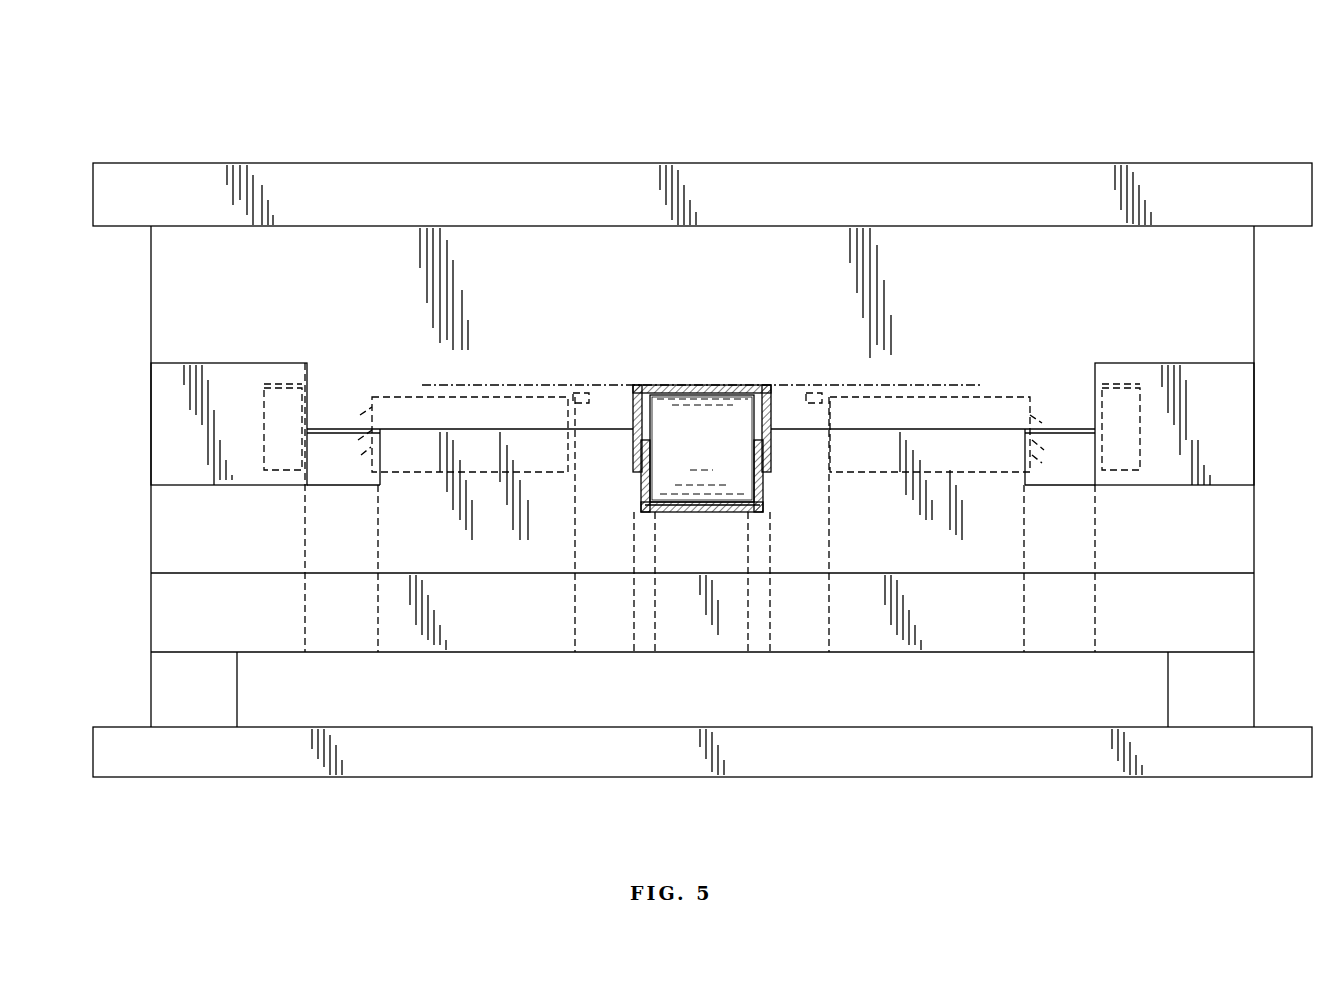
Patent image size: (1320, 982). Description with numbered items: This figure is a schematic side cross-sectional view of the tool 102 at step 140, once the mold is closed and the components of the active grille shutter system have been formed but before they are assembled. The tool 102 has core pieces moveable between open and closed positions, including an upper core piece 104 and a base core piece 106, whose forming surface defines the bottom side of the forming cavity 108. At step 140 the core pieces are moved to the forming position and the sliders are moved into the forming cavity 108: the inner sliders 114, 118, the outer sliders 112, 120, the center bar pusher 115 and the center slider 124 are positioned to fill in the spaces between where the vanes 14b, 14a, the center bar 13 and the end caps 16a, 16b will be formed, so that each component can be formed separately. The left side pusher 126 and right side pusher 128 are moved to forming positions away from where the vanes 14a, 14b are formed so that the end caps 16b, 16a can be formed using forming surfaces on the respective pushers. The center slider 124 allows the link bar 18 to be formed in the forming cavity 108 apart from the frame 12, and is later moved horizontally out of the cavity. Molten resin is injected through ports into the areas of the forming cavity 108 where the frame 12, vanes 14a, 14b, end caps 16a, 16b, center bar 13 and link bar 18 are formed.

The step 140 is at (1180, 93).
The tool 102 is at (345, 243).
The upper core piece 104 is at (720, 327).
The base core piece 106 is at (940, 505).
The forming cavity 108 is at (922, 374).
The frame 12 is at (820, 376).
The center bar 13 is at (633, 418).
The center slider 124 is at (718, 422).
The link bar 18 is at (762, 495).
The vane 14a is at (1010, 390).
The vane 14b is at (395, 390).
The end cap 16a is at (1120, 382).
The end cap 16b is at (283, 382).
The left side pusher 126 is at (204, 435).
The right side pusher 128 is at (1228, 435).
The outer slider 112 is at (344, 632).
The inner slider 114 is at (602, 632).
The center bar pusher 115 is at (700, 632).
The inner slider 118 is at (798, 632).
The outer slider 120 is at (1062, 632).